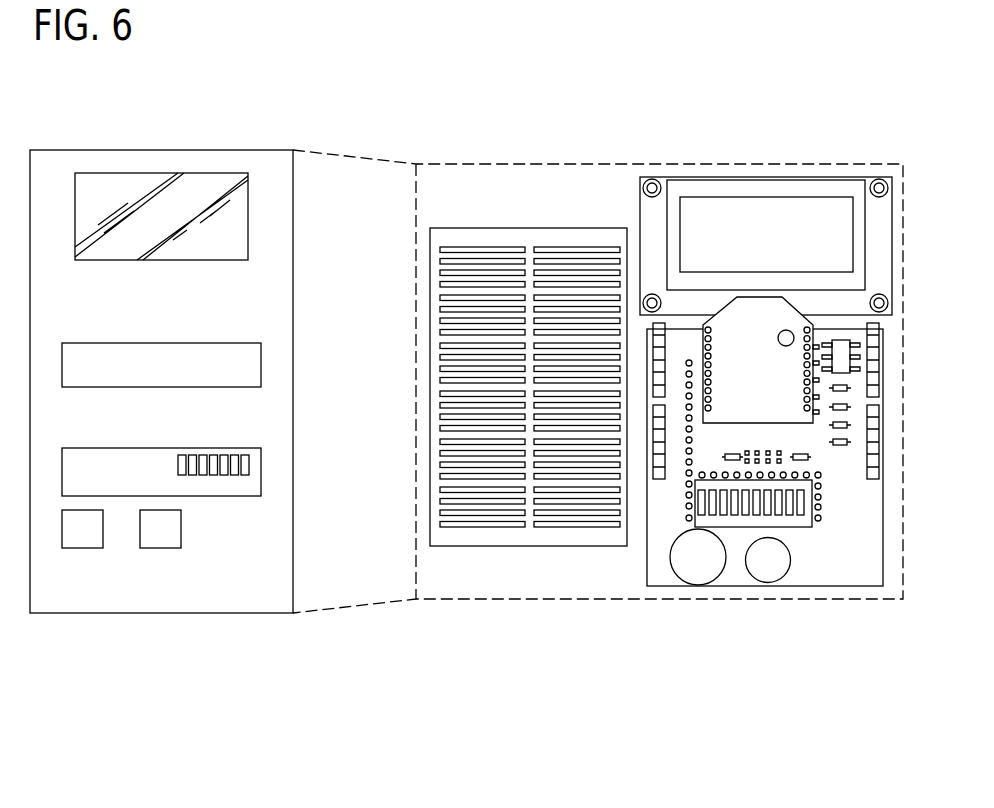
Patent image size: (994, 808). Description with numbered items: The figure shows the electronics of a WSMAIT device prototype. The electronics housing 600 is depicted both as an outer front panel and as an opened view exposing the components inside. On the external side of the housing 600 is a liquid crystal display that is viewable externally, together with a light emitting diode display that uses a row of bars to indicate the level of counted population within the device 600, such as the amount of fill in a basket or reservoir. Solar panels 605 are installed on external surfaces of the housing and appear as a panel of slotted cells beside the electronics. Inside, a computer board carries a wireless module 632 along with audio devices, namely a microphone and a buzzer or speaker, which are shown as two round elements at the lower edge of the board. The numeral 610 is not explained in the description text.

The electronics housing 600 is at (737, 113).
The solar panels 605 is at (530, 240).
The housing front panel 610 is at (143, 128).
The wireless module 632 is at (777, 394).